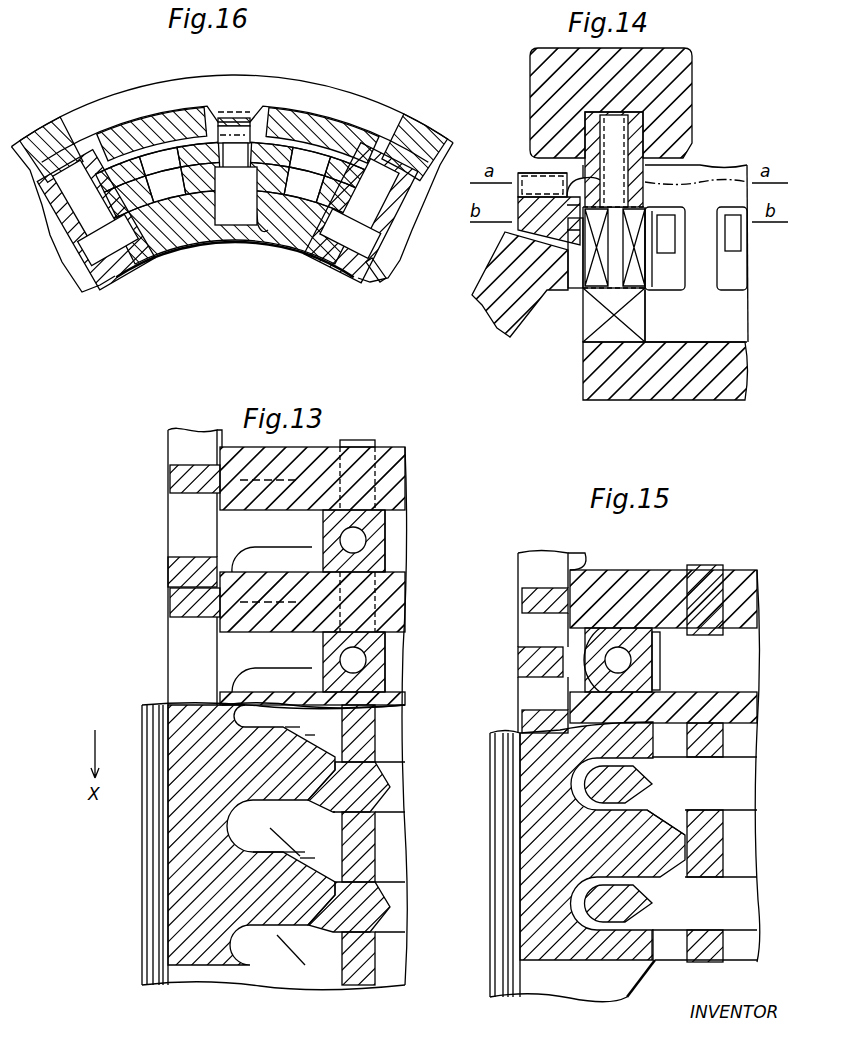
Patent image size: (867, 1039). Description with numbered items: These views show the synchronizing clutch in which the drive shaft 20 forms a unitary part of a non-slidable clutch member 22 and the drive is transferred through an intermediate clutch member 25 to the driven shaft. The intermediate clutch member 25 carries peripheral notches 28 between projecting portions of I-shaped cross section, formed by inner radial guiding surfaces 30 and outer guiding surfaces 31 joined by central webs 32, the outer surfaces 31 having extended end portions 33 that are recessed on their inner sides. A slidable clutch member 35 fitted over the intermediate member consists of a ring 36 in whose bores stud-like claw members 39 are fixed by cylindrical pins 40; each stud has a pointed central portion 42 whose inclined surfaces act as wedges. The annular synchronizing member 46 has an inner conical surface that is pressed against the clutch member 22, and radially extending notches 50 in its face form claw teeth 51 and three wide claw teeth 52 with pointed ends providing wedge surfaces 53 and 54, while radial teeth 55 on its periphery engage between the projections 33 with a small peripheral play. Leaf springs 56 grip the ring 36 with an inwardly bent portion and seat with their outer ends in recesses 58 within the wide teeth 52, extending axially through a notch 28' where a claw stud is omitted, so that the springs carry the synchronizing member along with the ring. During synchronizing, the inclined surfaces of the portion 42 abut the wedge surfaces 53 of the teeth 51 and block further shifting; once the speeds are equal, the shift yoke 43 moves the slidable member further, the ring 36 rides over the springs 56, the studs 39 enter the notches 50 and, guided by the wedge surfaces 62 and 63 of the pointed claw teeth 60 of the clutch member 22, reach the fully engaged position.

In FIG. 13, the drive shaft 20 is at (118, 948).
In FIG. 15, the drive shaft 20 is at (520, 990).
In FIG. 14, the clutch member 22 is at (495, 258).
In FIG. 13, the clutch member 22 is at (142, 943).
In FIG. 15, the clutch member 22 is at (518, 985).
In FIG. 16, the intermediate clutch member 25 is at (382, 278).
In FIG. 14, the intermediate clutch member 25 is at (665, 383).
In FIG. 16, the notches 28 is at (433, 519).
In FIG. 16, the notch 28' is at (254, 239).
In FIG. 14, the radial guiding surfaces 30 is at (735, 313).
In FIG. 14, the outer guiding surfaces 31 is at (712, 171).
In FIG. 13, the outer guiding surfaces 31 is at (405, 508).
In FIG. 15, the outer guiding surfaces 31 is at (735, 570).
In FIG. 14, the central webs 32 is at (712, 274).
In FIG. 15, the central webs 32 is at (720, 740).
In FIG. 14, the extended end portions 33 is at (533, 173).
In FIG. 13, the extended end portions 33 is at (176, 479).
In FIG. 15, the extended end portions 33 is at (537, 598).
In FIG. 16, the slidable clutch member 35 is at (266, 71).
In FIG. 16, the ring 36 is at (152, 93).
In FIG. 14, the ring 36 is at (645, 127).
In FIG. 15, the ring 36 is at (655, 676).
In FIG. 16, the claw members 39 is at (105, 244).
In FIG. 14, the claw members 39 is at (648, 266).
In FIG. 13, the claw members 39 is at (433, 519).
In FIG. 15, the claw members 39 is at (433, 519).
In FIG. 14, the cylindrical pins 40 is at (600, 180).
In FIG. 13, the cylindrical pins 40 is at (373, 538).
In FIG. 15, the cylindrical pins 40 is at (640, 660).
In FIG. 14, the central portion 42 is at (640, 292).
In FIG. 13, the central portion 42 is at (390, 787).
In FIG. 15, the central portion 42 is at (645, 782).
In FIG. 14, the shift yoke 43 is at (703, 82).
In FIG. 16, the synchronizing member 46 is at (289, 131).
In FIG. 14, the synchronizing member 46 is at (565, 213).
In FIG. 13, the synchronizing member 46 is at (220, 965).
In FIG. 15, the synchronizing member 46 is at (560, 965).
In FIG. 14, the notches 50 is at (672, 240).
In FIG. 13, the notches 50 is at (338, 843).
In FIG. 15, the notches 50 is at (700, 920).
In FIG. 16, the claw teeth 51 is at (338, 167).
In FIG. 14, the claw teeth 51 is at (669, 238).
In FIG. 13, the claw teeth 51 is at (335, 758).
In FIG. 15, the claw teeth 51 is at (662, 824).
In FIG. 16, the claw teeth 52 is at (236, 196).
In FIG. 13, the wedge surfaces 53 is at (326, 807).
In FIG. 13, the wedge surfaces 54 is at (305, 745).
In FIG. 14, the teeth 55 is at (518, 178).
In FIG. 13, the teeth 55 is at (170, 572).
In FIG. 15, the teeth 55 is at (520, 670).
In FIG. 16, the leaf springs 56 is at (232, 118).
In FIG. 14, the leaf springs 56 is at (700, 184).
In FIG. 16, the recesses 58 is at (234, 158).
In FIG. 14, the recesses 58 is at (577, 212).
In FIG. 16, the claw teeth 60 is at (195, 190).
In FIG. 14, the claw teeth 60 is at (575, 280).
In FIG. 13, the claw teeth 60 is at (268, 841).
In FIG. 15, the claw teeth 60 is at (615, 997).
In FIG. 13, the wedge-shaped surfaces 62 is at (314, 857).
In FIG. 13, the wedge-shaped surfaces 63 is at (285, 832).